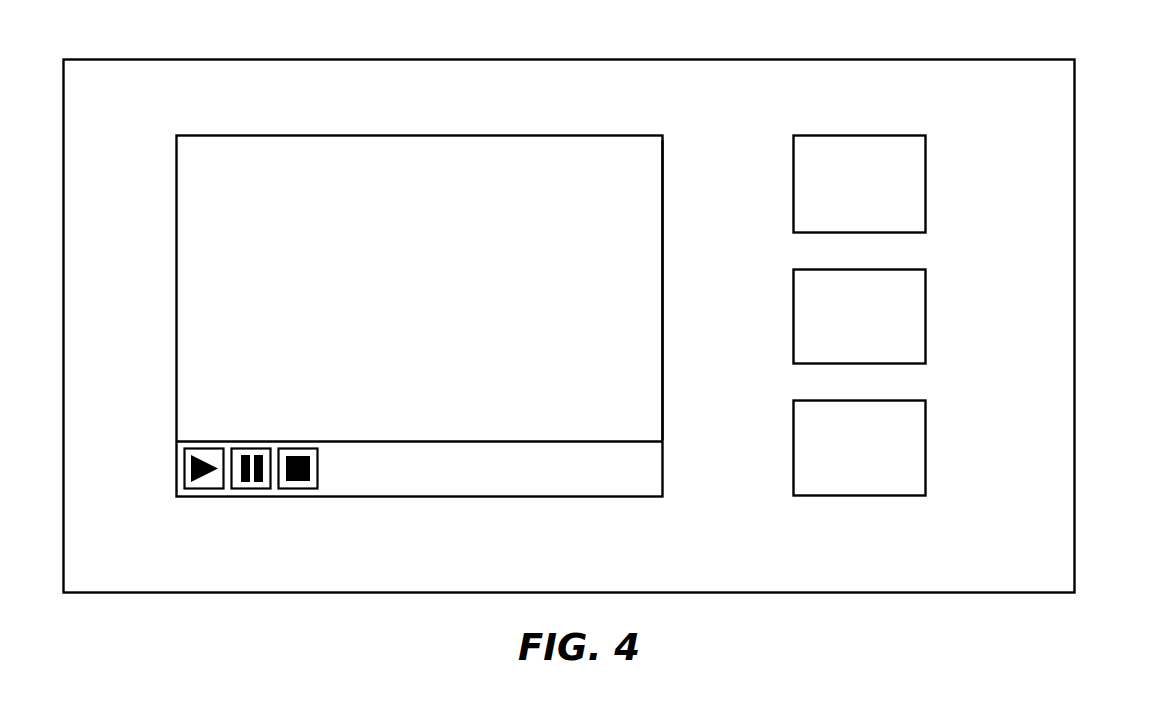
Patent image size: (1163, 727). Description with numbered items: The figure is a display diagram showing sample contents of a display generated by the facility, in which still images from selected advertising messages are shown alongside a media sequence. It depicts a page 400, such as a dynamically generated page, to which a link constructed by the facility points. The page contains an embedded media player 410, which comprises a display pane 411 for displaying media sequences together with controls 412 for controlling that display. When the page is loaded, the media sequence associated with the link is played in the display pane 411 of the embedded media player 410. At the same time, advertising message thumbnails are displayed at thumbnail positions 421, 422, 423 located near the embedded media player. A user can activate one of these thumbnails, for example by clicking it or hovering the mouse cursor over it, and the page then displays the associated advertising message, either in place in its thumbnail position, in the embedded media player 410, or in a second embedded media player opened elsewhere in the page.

The page 400 is at (609, 311).
The embedded media player 410 is at (459, 301).
The display pane 411 is at (692, 290).
The controls 412 is at (172, 441).
The thumbnail position 421 is at (899, 169).
The thumbnail position 422 is at (899, 302).
The thumbnail position 423 is at (899, 433).